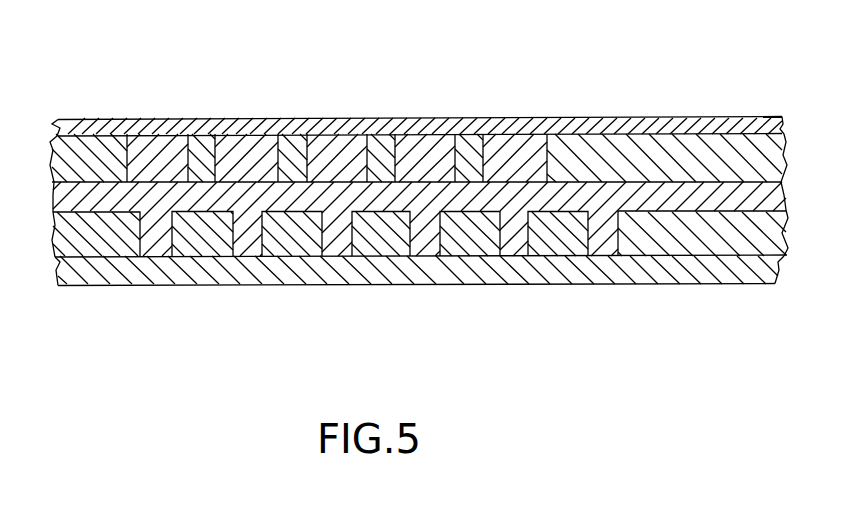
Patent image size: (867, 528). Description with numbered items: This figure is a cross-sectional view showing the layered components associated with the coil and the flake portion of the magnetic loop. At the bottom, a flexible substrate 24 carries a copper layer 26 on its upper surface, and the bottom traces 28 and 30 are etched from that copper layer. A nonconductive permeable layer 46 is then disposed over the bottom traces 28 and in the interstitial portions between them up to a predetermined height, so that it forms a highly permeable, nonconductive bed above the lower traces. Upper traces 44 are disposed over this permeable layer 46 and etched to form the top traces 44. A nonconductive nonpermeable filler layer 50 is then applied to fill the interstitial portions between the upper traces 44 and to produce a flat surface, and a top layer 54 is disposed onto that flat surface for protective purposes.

The flexible substrate 24 is at (409, 278).
The copper layer 26 is at (692, 240).
The bottom traces 28 is at (204, 243).
The bottom trace 30 is at (552, 243).
The upper traces 44 is at (145, 145).
The nonconductive permeable layer 46 is at (600, 202).
The nonconductive nonpermeable filler layer 50 is at (83, 147).
The top protective layer 54 is at (667, 117).